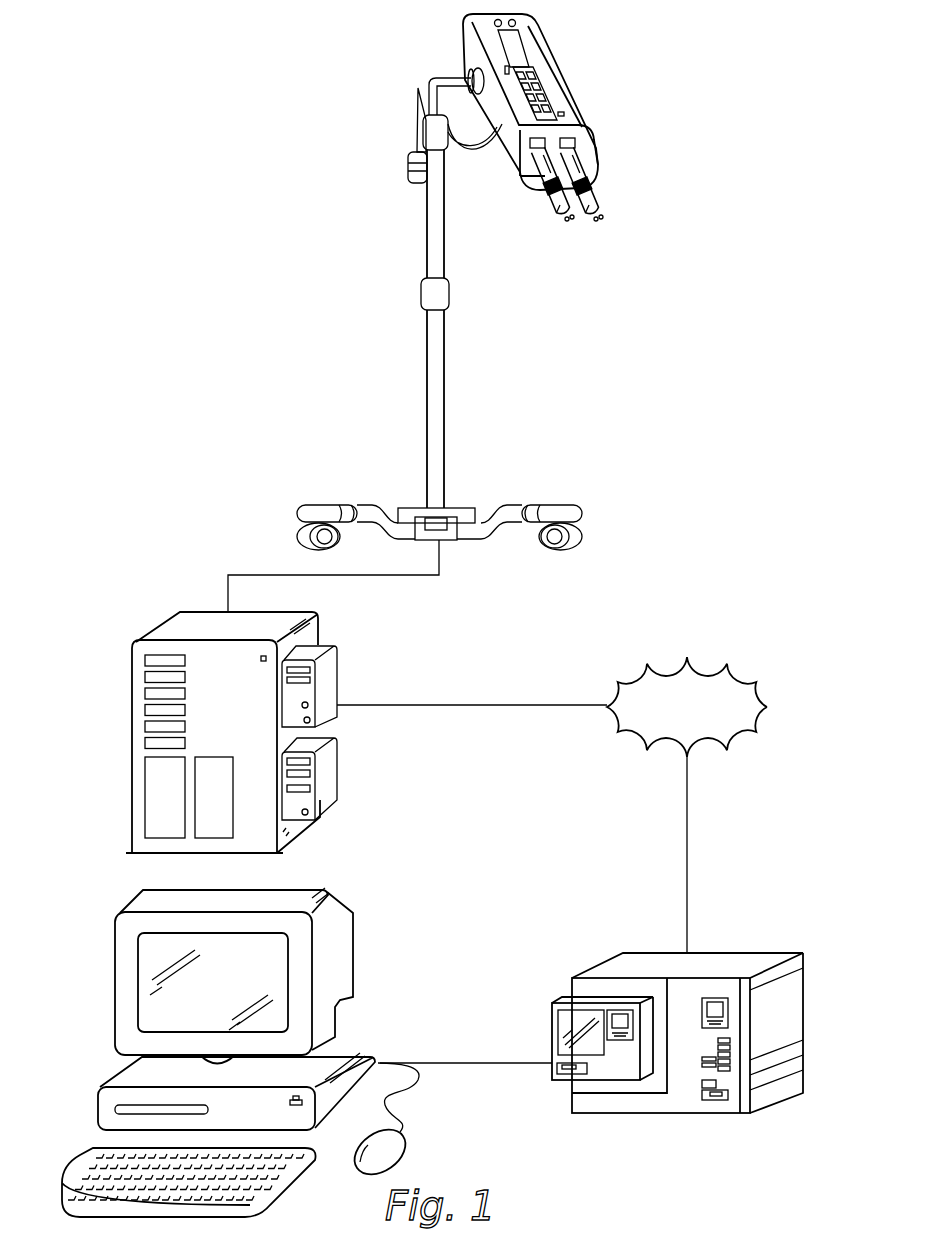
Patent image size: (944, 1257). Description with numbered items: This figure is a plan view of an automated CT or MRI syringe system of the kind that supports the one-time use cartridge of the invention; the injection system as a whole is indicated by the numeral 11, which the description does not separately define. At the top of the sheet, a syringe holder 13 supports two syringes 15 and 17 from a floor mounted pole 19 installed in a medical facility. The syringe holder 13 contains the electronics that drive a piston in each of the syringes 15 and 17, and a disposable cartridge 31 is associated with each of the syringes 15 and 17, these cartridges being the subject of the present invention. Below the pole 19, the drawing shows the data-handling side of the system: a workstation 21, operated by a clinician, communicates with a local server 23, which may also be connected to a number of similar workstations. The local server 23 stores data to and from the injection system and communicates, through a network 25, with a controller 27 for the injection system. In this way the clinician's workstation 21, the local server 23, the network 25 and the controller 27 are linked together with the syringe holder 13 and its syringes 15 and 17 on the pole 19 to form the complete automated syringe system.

The powered injector 11 is at (588, 100).
The syringe holder 13 is at (540, 63).
The syringe 15 is at (577, 167).
The syringe 17 is at (545, 163).
The disposable cartridge 31 is at (590, 200).
The floor mounted pole 19 is at (443, 358).
The controller 27 is at (277, 616).
The network 25 is at (687, 648).
The workstation 21 is at (378, 958).
The local server 23 is at (713, 960).